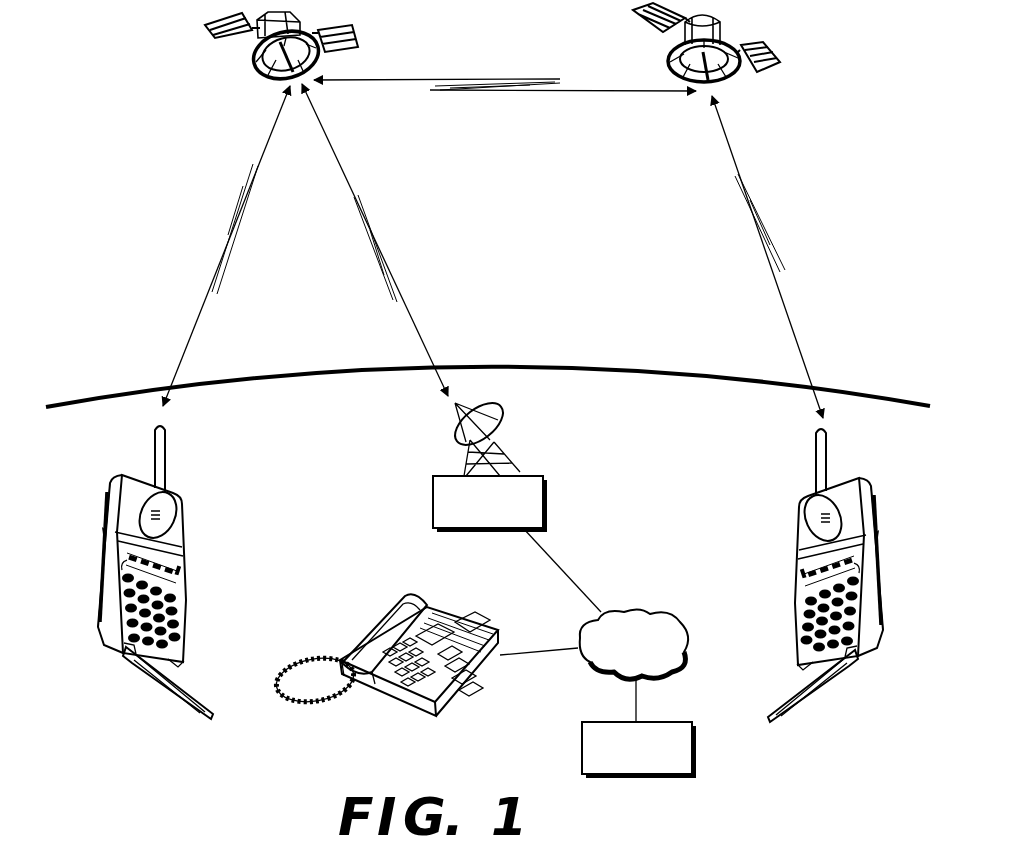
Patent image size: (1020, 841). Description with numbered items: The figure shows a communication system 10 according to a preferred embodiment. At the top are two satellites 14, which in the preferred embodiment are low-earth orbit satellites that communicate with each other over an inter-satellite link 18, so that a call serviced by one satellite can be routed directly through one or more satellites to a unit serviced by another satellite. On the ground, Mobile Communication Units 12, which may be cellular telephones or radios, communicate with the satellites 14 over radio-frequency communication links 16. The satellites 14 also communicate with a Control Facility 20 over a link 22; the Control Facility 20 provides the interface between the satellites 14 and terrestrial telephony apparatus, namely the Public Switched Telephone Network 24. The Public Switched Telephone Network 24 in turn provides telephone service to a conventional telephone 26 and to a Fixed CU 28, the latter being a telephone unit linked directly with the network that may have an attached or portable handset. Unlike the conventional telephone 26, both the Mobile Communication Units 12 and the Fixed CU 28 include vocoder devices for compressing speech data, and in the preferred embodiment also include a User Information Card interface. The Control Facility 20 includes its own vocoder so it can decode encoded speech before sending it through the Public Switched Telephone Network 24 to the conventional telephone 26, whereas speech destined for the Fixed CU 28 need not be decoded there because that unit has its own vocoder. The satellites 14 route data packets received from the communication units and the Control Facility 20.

The communication system 10 is at (292, 748).
The Mobile Communication Unit 12 is at (184, 525).
The satellite 14 is at (262, 72).
The radio-frequency communication link 16 is at (232, 222).
The inter-satellite link 18 is at (510, 92).
The Control Facility 20 is at (433, 498).
The link 22 is at (372, 238).
The Public Switched Telephone Network 24 is at (688, 628).
The conventional telephone 26 is at (378, 630).
The Fixed CU 28 is at (582, 747).